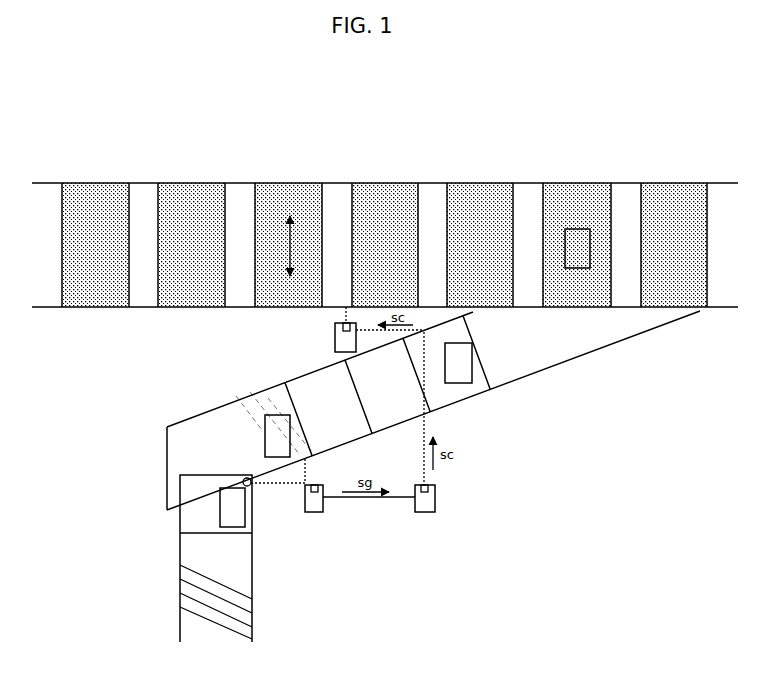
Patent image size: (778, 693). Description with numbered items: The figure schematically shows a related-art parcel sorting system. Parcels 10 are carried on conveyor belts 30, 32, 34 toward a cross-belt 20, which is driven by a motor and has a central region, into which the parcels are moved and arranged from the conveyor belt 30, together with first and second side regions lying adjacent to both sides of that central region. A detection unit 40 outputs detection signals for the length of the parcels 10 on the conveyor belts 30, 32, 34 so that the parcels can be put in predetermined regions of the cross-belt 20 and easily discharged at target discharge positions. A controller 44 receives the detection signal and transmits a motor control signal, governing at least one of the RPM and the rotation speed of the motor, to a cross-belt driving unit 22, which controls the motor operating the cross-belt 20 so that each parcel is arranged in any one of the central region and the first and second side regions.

The parcel 10 is at (577, 242).
The cross-belt 20 is at (292, 182).
The cross-belt driving unit 22 is at (335, 345).
The conveyor belt 30 is at (157, 534).
The conveyor belt 32 is at (97, 480).
The conveyor belt 34 is at (163, 472).
The detection unit 40 is at (315, 513).
The controller 44 is at (428, 513).